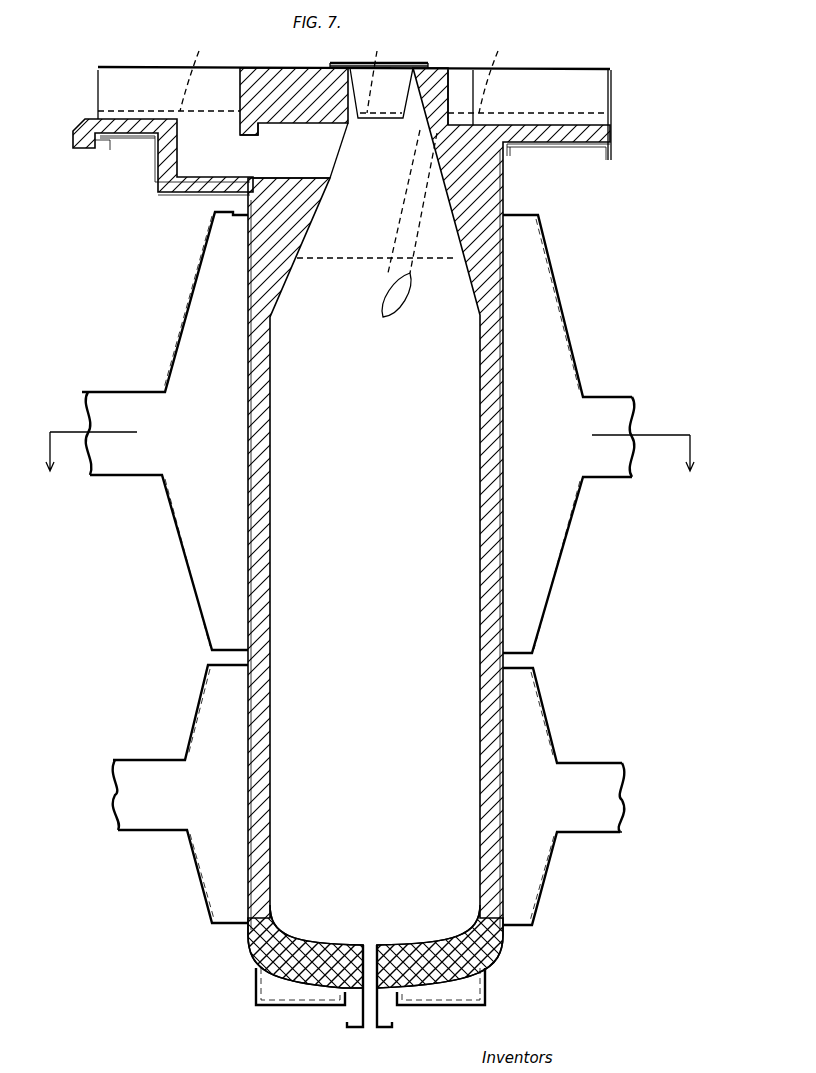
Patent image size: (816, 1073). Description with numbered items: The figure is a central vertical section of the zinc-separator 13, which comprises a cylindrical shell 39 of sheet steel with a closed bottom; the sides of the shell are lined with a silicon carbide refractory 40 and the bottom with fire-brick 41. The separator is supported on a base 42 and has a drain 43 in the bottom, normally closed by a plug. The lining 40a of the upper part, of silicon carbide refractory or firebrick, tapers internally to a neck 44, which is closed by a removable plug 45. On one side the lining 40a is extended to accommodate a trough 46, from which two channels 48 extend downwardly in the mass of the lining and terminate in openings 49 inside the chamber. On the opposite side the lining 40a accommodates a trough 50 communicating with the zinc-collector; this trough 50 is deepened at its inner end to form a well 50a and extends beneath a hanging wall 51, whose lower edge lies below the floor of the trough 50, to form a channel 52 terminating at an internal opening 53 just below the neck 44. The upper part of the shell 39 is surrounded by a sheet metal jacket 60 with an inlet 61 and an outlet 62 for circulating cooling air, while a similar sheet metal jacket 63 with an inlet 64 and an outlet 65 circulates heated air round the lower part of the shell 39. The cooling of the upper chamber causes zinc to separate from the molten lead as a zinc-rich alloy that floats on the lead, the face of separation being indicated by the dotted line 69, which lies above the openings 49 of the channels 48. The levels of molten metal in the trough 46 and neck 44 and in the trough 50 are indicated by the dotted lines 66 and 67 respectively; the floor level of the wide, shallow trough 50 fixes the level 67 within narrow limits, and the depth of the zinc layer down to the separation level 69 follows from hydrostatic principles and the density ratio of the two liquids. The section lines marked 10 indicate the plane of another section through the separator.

The section line 10- 10 is at (370, 451).
The zinc-separator 13 is at (547, 646).
The cylindrical shell 39 is at (248, 305).
The silicon carbide refractory 40 is at (257, 602).
The lining of the upper part 40a is at (490, 177).
The fire-brick 41 is at (247, 951).
The base 42 is at (298, 1007).
The drain 43 is at (372, 1018).
The neck 44 is at (347, 100).
The removable plug 45 is at (402, 75).
The trough 46 is at (547, 85).
The channels 48 is at (412, 207).
The openings 49 is at (400, 297).
The trough 50 is at (143, 78).
The well 50a is at (167, 168).
The hanging wall 51 is at (243, 130).
The channel 52 is at (306, 170).
The internal opening 53 is at (343, 145).
The sheet metal jacket 60 is at (543, 312).
The inlet 61 is at (112, 400).
The outlet 62 is at (602, 408).
The sheet metal jacket 63 is at (202, 845).
The inlet 64 is at (145, 800).
The outlet 65 is at (605, 812).
The dotted line 66 is at (494, 73).
The dotted line 67 is at (284, 73).
The dotted line 69 is at (332, 262).